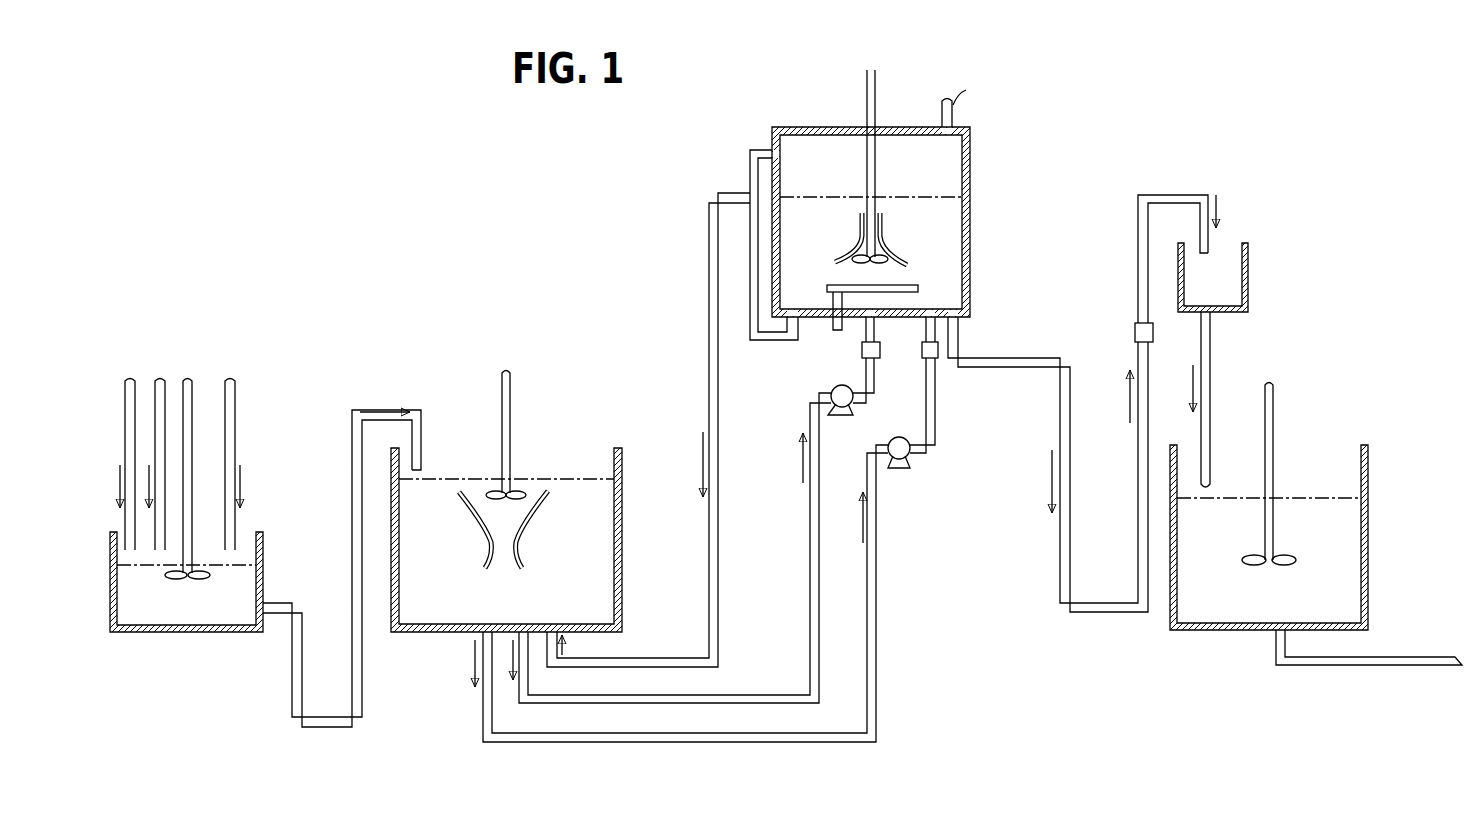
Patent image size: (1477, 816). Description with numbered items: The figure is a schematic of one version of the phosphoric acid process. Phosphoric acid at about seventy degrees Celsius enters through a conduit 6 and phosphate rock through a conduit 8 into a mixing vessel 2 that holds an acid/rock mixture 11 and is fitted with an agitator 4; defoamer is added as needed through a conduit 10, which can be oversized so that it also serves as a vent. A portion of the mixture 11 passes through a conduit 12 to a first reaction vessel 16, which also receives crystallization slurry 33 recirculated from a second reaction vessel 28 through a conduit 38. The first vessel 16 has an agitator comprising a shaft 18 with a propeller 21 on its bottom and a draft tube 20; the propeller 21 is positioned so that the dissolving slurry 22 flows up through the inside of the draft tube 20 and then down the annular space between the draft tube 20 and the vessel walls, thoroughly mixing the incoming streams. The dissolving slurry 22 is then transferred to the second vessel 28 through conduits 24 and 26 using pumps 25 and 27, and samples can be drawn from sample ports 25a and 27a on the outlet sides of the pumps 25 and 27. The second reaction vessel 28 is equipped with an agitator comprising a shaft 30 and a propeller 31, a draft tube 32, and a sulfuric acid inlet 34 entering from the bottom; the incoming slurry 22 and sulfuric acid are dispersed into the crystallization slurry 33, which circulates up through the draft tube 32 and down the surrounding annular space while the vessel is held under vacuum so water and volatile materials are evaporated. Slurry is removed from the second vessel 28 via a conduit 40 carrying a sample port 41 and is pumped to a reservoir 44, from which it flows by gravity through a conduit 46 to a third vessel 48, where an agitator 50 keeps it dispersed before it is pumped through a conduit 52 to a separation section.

The mixing vessel 2 is at (160, 632).
The agitator 4 is at (192, 383).
The conduit 6 is at (126, 393).
The conduit 8 is at (237, 393).
The conduit 10 is at (159, 380).
The acid/rock mixture 11 is at (190, 600).
The conduit 12 is at (352, 535).
The first reaction vessel 16 is at (622, 548).
The shaft 18 is at (512, 410).
The draft tube 20 is at (537, 503).
The propeller 21 is at (525, 492).
The dissolving slurry 22 is at (570, 578).
The conduit 24 is at (595, 743).
The pump 25 is at (902, 437).
The sample port 25a is at (938, 358).
The conduit 26 is at (742, 697).
The pump 27 is at (841, 419).
The sample port 27a is at (862, 360).
The second reaction vessel 28 is at (968, 208).
The shaft 30 is at (867, 92).
The propeller 31 is at (847, 267).
The draft tube 32 is at (885, 247).
The crystallization slurry 33 is at (822, 230).
The sulfuric acid inlet 34 is at (908, 284).
The conduit 38 is at (750, 167).
The conduit 40 is at (1008, 360).
The sample port 41 is at (1135, 322).
The reservoir 44 is at (1250, 283).
The conduit 46 is at (1211, 345).
The third vessel 48 is at (1368, 543).
The agitator 50 is at (1275, 410).
The conduit 52 is at (1400, 667).